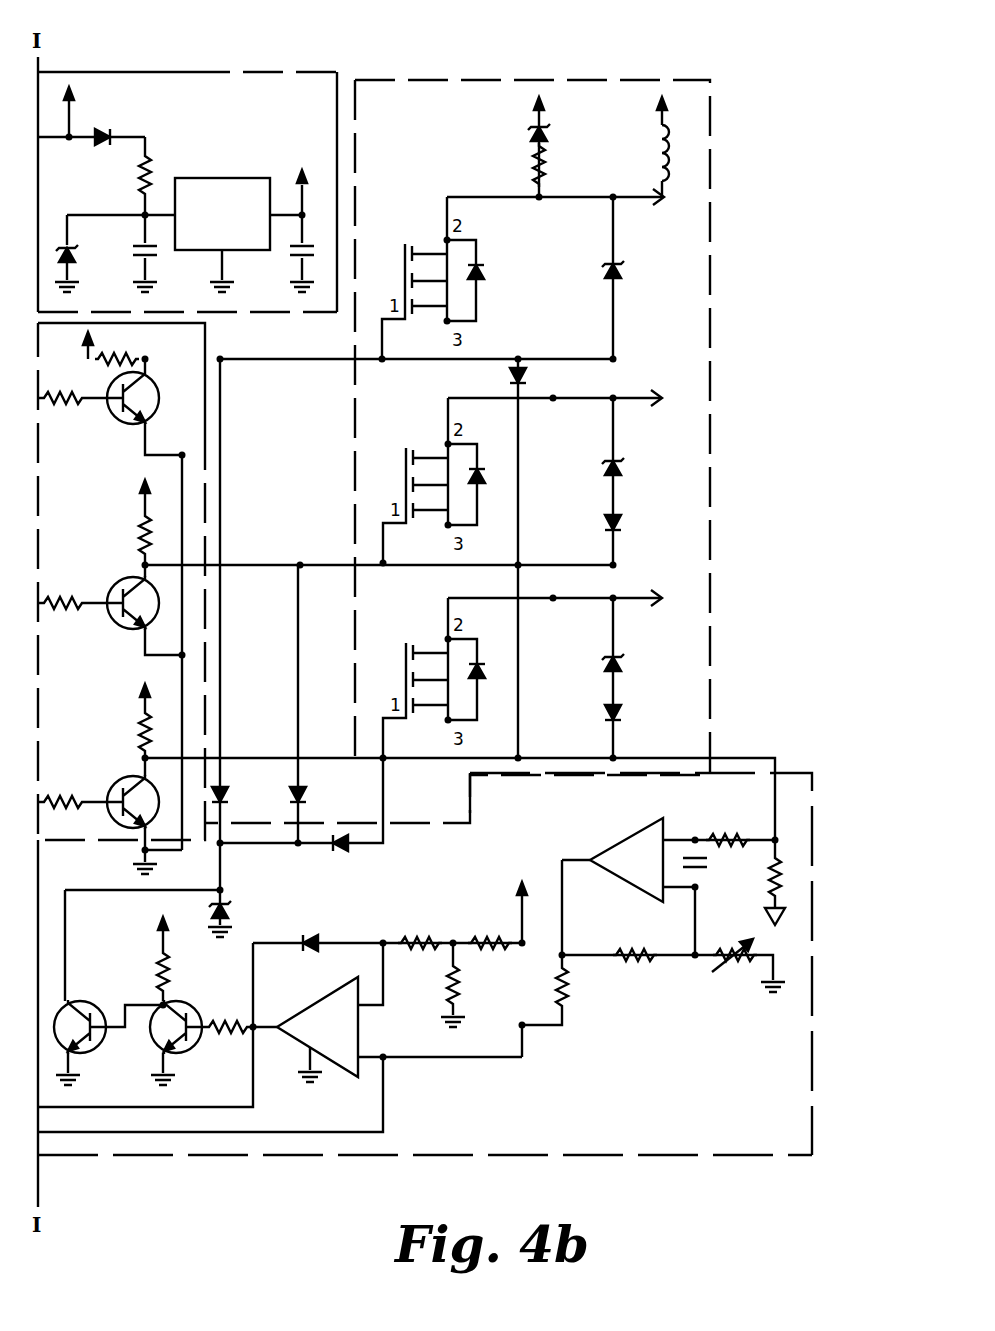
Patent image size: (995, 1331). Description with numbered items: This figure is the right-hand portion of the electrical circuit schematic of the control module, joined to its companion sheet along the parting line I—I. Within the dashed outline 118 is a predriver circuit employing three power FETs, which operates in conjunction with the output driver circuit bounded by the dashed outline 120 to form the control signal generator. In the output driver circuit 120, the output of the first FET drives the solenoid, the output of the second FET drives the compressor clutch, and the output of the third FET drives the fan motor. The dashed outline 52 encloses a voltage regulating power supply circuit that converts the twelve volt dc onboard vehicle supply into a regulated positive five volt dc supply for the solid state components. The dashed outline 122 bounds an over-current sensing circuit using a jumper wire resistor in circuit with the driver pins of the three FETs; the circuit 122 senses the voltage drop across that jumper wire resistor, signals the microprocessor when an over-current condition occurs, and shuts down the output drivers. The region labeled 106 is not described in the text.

The voltage regulating power supply circuit 52 is at (152, 72).
The output driver circuit 106 is at (420, 74).
The predriver circuit 118 is at (205, 425).
The output driver circuit 120 is at (710, 352).
The over-current sensing circuit 122 is at (178, 1160).